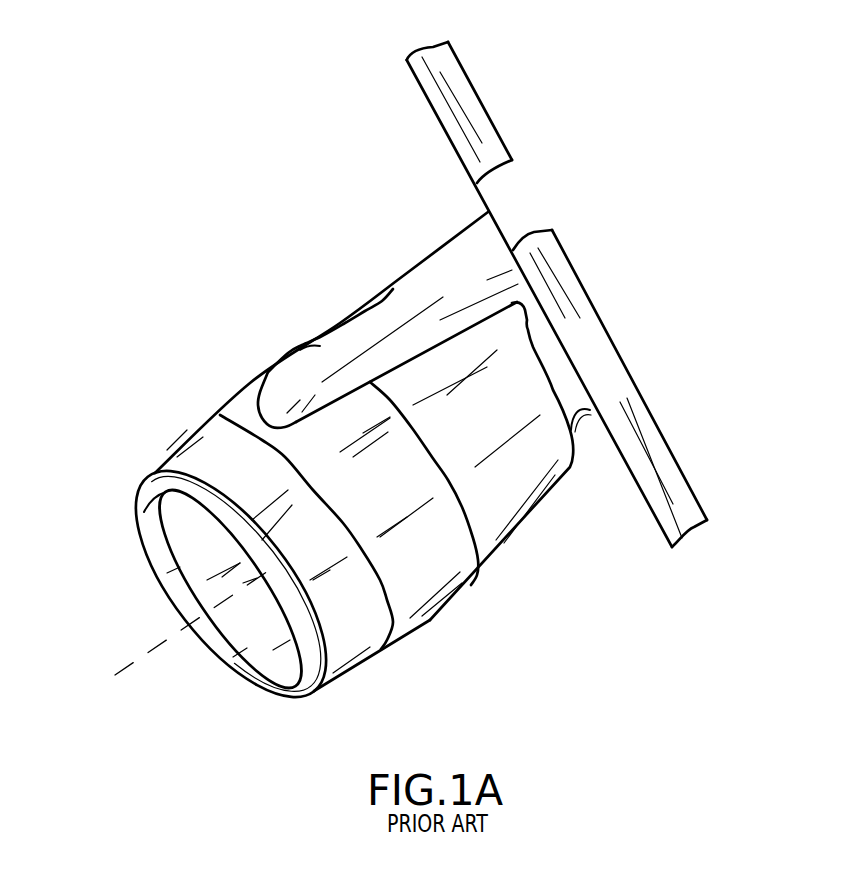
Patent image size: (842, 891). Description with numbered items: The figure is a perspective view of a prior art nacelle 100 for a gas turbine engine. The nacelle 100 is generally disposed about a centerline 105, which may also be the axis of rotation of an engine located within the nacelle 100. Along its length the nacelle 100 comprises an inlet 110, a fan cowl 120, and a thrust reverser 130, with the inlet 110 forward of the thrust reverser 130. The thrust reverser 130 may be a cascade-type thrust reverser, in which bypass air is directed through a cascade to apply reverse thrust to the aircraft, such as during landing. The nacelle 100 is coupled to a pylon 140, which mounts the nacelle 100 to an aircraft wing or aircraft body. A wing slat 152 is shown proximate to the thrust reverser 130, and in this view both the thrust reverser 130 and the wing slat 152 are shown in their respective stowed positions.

The nacelle 100 is at (396, 397).
The centerline 105 is at (133, 662).
The inlet 110 is at (255, 667).
The fan cowl 120 is at (432, 641).
The thrust reverser 130 is at (508, 545).
The pylon 140 is at (404, 291).
The wing slat 152 is at (665, 440).